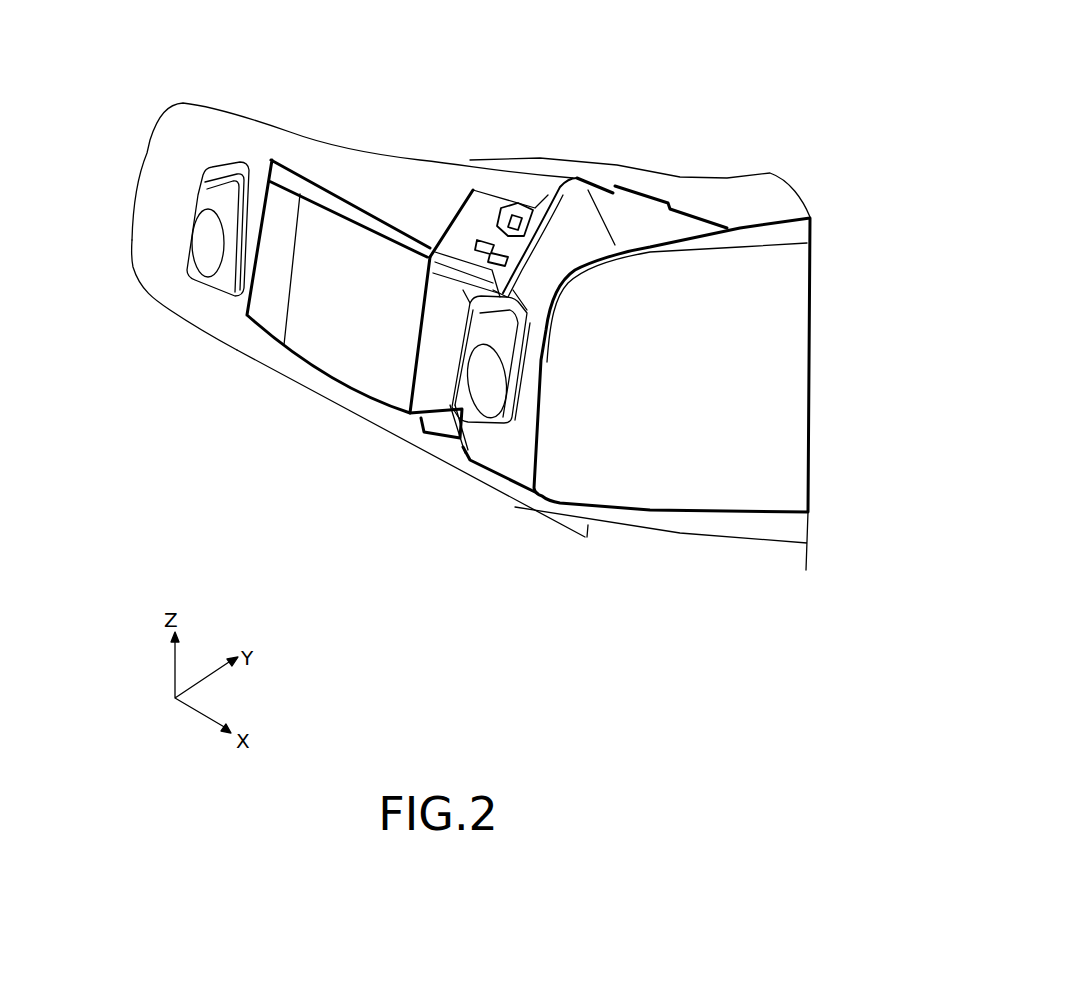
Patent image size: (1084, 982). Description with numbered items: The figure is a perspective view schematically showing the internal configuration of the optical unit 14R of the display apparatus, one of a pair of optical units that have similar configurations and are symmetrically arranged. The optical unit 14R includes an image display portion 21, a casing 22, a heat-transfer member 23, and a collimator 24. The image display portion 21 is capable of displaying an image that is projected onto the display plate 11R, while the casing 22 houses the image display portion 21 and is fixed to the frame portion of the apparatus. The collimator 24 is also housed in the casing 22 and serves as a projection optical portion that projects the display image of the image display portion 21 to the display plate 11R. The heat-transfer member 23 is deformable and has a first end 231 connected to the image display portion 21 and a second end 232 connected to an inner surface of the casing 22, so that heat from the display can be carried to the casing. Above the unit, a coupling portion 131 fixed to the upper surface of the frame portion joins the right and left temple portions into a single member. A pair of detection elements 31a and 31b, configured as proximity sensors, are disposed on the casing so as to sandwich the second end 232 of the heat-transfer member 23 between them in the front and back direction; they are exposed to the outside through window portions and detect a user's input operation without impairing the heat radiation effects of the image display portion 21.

The optical unit 14R is at (143, 152).
The heat-transfer member 23 is at (313, 178).
The first end 231 is at (453, 210).
The second end 232 is at (370, 360).
The image display portion 21 is at (488, 205).
The collimator 24 is at (580, 220).
The coupling portion 131 is at (735, 200).
The display plate 11R is at (653, 475).
The casing 22 is at (260, 367).
The detection element 31a is at (478, 415).
The detection element 31b is at (200, 280).